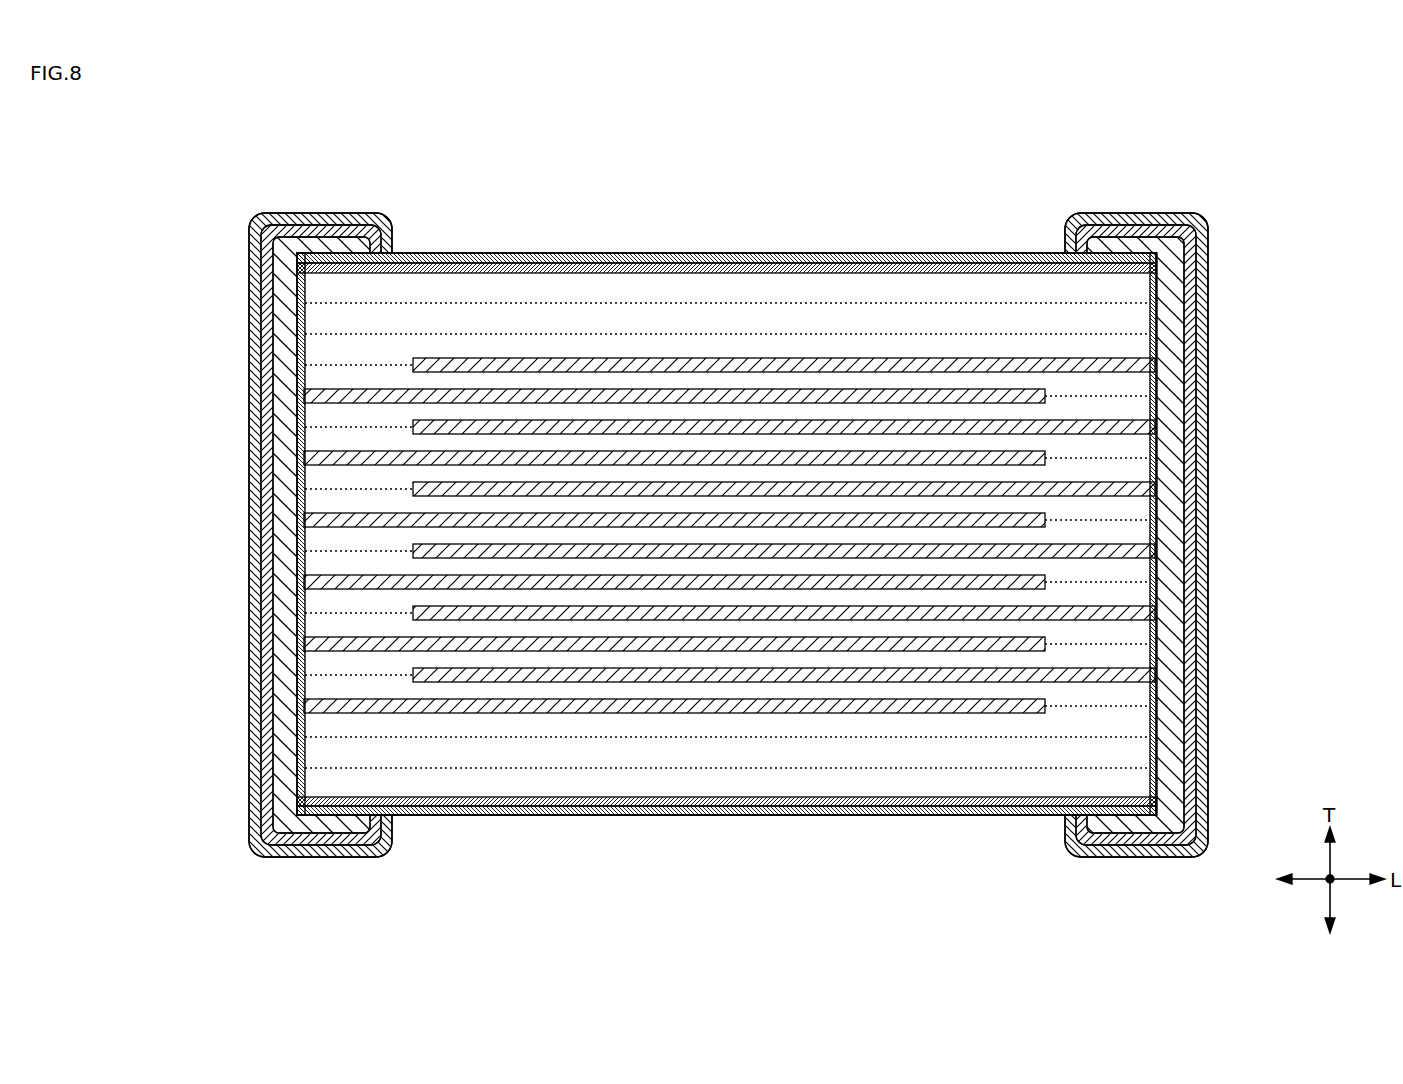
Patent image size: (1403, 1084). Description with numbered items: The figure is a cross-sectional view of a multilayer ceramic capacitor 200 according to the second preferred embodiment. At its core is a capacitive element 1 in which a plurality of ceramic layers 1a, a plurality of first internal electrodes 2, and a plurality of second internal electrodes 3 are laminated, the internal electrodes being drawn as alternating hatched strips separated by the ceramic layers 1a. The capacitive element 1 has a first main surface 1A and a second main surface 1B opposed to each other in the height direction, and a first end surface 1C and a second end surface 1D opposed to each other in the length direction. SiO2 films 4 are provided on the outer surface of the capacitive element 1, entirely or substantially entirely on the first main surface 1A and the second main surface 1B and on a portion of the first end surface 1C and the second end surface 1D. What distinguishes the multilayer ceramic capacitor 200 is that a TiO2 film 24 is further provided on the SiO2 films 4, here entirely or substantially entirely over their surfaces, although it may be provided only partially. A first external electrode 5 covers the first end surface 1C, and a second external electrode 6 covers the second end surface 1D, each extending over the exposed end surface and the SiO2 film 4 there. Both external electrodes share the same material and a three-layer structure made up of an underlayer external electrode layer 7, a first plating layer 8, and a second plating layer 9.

The multilayer ceramic capacitor 200 is at (214, 154).
The capacitive element 1 is at (448, 292).
The ceramic layers 1a is at (298, 279).
The first main surface 1A is at (528, 815).
The second main surface 1B is at (498, 258).
The first end surface 1C is at (298, 504).
The second end surface 1D is at (1155, 505).
The first internal electrodes 2 is at (727, 397).
The second internal electrodes 3 is at (690, 360).
The SiO2 films 4 is at (726, 520).
The TiO2 film 24 is at (620, 253).
The first external electrode 5 is at (372, 131).
The second external electrode 6 is at (1158, 131).
The underlayer external electrode layer 7 is at (306, 239).
The first plating layer 8 is at (329, 227).
The second plating layer 9 is at (350, 215).